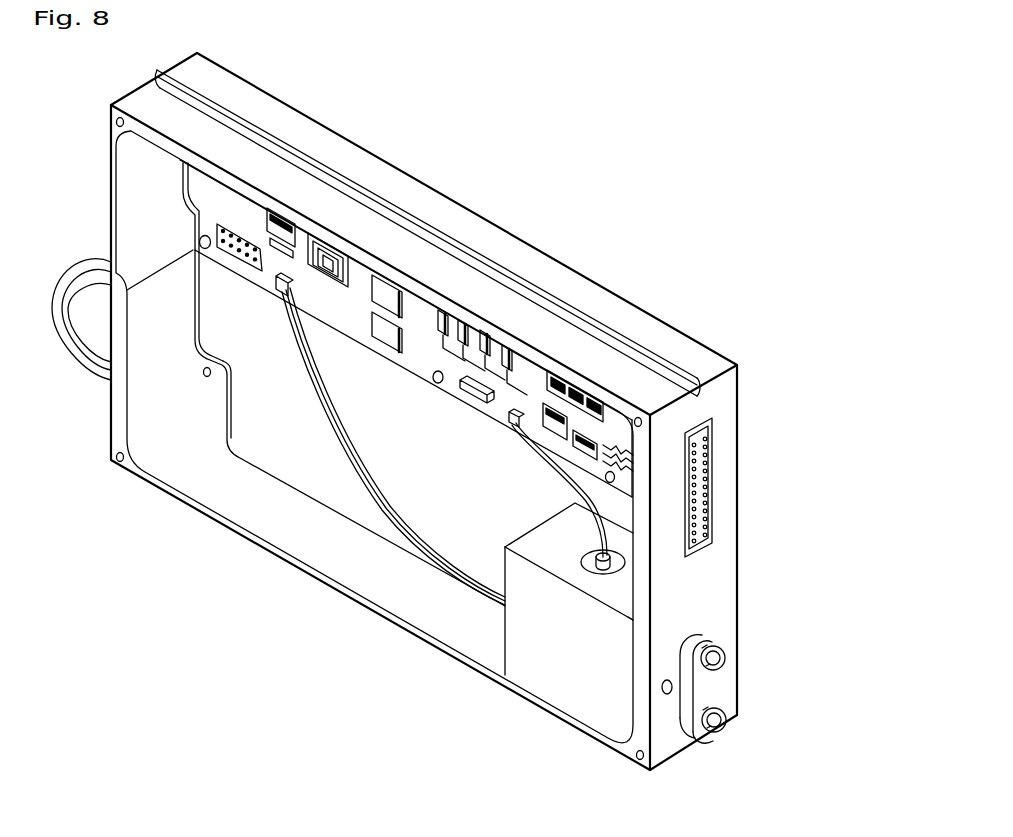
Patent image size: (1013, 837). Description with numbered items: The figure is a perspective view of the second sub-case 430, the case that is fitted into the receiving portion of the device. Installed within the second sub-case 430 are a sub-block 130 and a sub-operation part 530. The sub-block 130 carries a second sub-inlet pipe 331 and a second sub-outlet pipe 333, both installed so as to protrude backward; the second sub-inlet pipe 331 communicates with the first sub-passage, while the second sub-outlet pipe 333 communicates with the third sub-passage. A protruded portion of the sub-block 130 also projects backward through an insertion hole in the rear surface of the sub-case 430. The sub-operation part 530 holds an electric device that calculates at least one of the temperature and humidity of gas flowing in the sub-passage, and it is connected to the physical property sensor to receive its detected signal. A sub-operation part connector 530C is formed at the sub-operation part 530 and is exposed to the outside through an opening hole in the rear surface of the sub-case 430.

The sub-operation part 530 is at (358, 270).
The sub-operation part connector 530C is at (705, 470).
The second sub-outlet pipe 333 is at (722, 653).
The second sub-inlet pipe 331 is at (737, 718).
The second sub-case 430 is at (247, 497).
The sub-block 130 is at (578, 670).